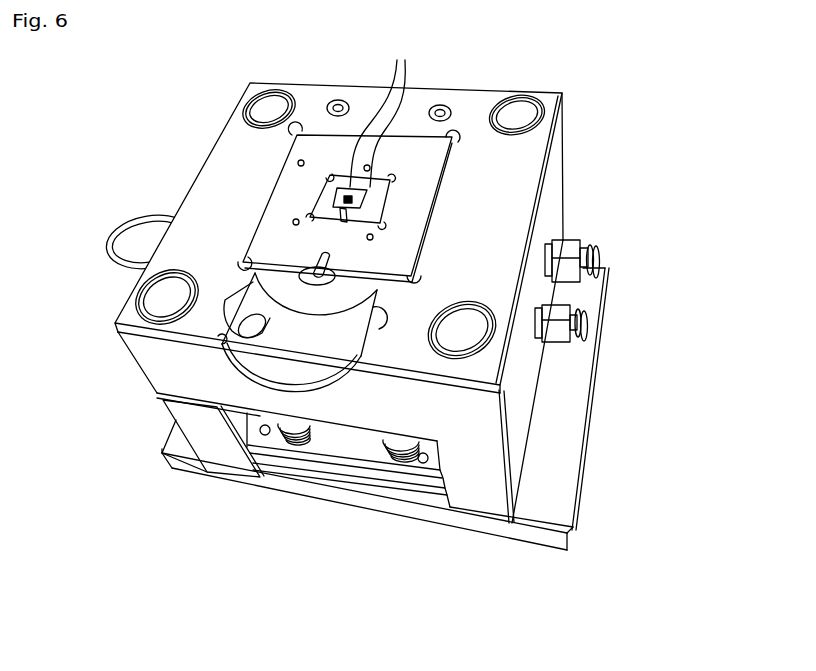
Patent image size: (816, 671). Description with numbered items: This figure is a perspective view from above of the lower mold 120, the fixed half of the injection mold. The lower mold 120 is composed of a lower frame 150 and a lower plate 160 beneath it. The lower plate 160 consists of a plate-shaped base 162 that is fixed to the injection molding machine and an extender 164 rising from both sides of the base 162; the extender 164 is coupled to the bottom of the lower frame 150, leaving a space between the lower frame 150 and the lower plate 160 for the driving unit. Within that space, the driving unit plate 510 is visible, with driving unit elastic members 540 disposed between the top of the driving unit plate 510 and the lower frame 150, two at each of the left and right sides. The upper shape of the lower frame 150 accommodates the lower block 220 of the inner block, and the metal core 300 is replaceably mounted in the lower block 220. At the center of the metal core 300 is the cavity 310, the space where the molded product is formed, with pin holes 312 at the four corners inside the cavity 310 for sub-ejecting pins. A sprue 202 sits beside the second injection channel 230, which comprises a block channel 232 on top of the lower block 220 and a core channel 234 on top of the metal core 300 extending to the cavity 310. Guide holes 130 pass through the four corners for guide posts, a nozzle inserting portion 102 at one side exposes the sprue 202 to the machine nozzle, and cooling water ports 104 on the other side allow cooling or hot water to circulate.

The nozzle inserting portion 102 is at (324, 368).
The cooling water ports 104 is at (556, 310).
The lower mold 120 is at (365, 519).
The guide holes 130 is at (160, 297).
The lower frame 150 is at (450, 420).
The lower plate 160 is at (367, 542).
The base 162 is at (543, 537).
The extender 164 is at (497, 507).
The sprue 202 is at (312, 282).
The lower block 220 is at (305, 157).
The second injection channel 230 is at (177, 242).
The block channel 232 is at (312, 214).
The core channel 234 is at (318, 262).
The metal core 300 is at (336, 196).
The cavity 310 is at (335, 190).
The pin holes 312 is at (379, 110).
The driving unit plate 510 is at (317, 500).
The driving unit elastic members 540 is at (273, 443).